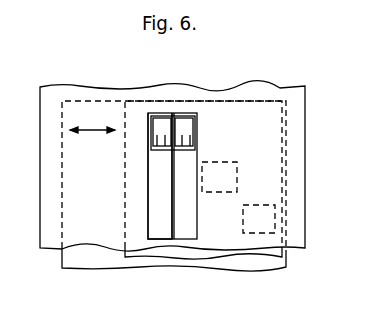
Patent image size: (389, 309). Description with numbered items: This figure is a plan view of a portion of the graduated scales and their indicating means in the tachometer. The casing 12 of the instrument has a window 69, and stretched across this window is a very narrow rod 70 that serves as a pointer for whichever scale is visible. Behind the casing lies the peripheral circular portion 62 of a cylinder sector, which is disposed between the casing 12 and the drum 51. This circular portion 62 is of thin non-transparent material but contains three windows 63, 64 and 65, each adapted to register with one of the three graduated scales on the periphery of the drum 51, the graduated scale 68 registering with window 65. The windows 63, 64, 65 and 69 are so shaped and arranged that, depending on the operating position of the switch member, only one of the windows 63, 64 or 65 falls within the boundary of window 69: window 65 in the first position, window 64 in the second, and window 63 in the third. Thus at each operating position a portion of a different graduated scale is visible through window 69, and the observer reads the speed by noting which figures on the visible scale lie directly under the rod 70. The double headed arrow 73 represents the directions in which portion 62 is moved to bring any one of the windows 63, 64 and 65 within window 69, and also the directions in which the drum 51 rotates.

The drum 51 is at (256, 266).
The casing 12 is at (102, 240).
The peripheral circular portion 62 is at (203, 255).
The double headed arrow 73 is at (88, 128).
The window 69 is at (153, 221).
The window 65 is at (148, 136).
The rod 70 is at (174, 207).
The graduated scale 68 is at (188, 128).
The window 64 is at (220, 160).
The window 63 is at (260, 203).